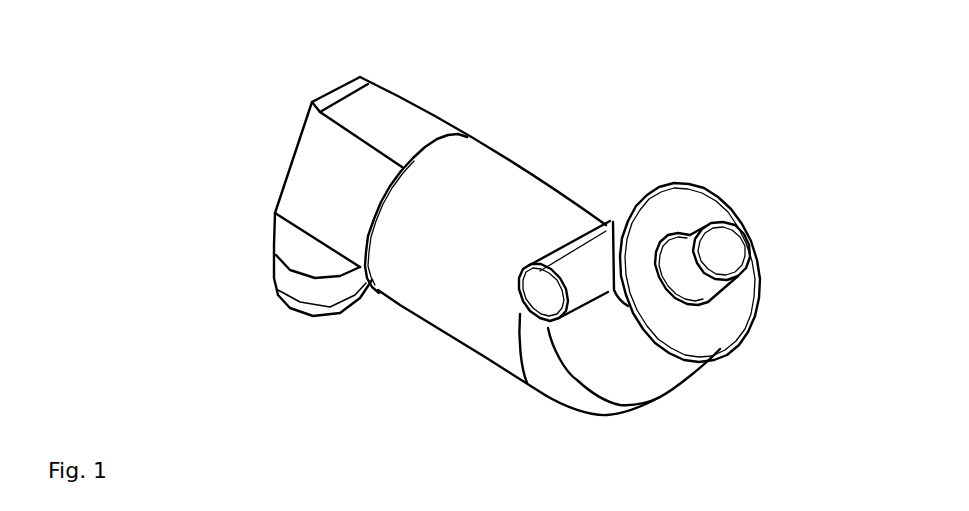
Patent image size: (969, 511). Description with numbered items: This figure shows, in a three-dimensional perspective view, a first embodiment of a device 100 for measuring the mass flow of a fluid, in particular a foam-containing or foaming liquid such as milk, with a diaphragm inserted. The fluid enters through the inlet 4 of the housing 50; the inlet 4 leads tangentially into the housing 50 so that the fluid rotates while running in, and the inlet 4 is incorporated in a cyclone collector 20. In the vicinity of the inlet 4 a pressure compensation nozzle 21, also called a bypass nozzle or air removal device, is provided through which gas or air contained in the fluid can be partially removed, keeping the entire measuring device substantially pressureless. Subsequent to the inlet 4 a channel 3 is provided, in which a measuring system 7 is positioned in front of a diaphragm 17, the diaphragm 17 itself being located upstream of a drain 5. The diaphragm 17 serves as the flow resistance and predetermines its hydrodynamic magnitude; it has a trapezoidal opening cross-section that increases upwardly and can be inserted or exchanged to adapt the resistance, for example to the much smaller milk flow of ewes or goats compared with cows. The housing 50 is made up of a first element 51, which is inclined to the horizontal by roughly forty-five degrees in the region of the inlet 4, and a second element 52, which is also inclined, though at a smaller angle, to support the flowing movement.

The device 100 is at (600, 100).
The channel 3 is at (476, 239).
The housing 50 is at (497, 150).
The second element of the housing 52 is at (405, 318).
The measuring system 7 is at (367, 142).
The diaphragm 17 is at (342, 87).
The drain 5 is at (298, 287).
The inlet 4 is at (543, 303).
The cyclone collector 20 is at (646, 322).
The first element of the housing 51 is at (717, 382).
The pressure compensation nozzle 21 is at (727, 253).